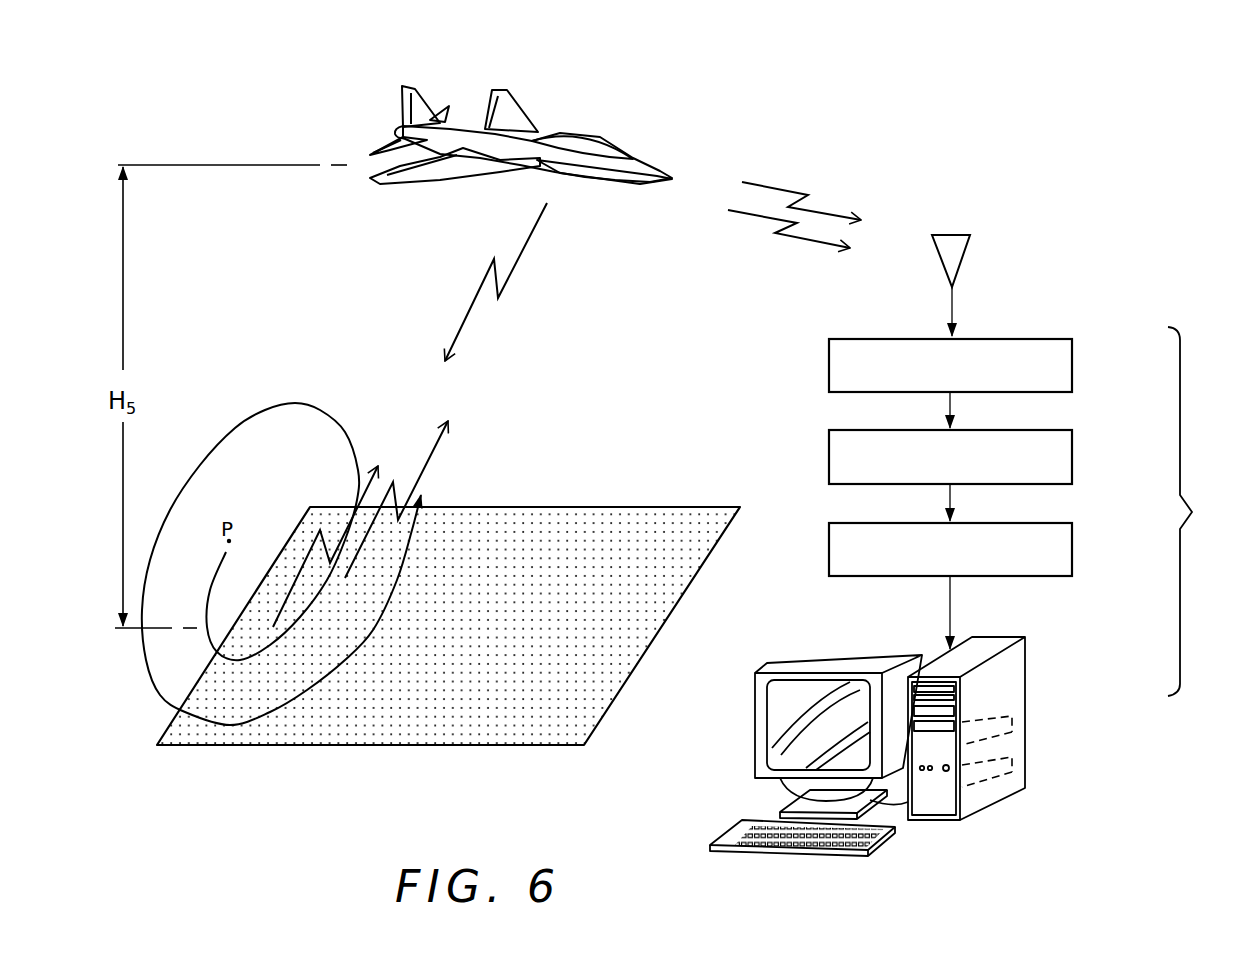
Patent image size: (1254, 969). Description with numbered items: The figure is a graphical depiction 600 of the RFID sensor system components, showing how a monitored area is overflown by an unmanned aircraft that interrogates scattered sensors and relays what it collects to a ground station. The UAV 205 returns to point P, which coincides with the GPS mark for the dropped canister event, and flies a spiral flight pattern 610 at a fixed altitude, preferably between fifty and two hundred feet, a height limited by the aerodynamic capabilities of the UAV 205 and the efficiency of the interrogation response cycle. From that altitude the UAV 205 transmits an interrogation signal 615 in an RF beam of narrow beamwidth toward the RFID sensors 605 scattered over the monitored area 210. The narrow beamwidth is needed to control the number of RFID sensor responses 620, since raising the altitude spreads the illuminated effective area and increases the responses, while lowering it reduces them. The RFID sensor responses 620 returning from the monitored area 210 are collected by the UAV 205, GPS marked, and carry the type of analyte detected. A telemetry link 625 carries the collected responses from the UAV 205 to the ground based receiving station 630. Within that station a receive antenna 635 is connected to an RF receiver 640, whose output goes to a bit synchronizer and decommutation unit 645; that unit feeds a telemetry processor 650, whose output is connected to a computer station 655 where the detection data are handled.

The UAV 205 is at (594, 148).
The monitored area 210 is at (549, 505).
The graphical depiction of the RFID system components 600 is at (915, 102).
The RFID sensors 605 is at (637, 540).
The spiral flight pattern 610 is at (268, 404).
The interrogation signal 615 is at (525, 253).
The RFID sensor responses 620 is at (427, 460).
The telemetry signal 625 is at (755, 213).
The ground based receiving station 630 is at (1203, 511).
The receive antenna 635 is at (960, 250).
The RF receiver 640 is at (1062, 355).
The bit synchronizer and decommutation unit 645 is at (1062, 446).
The telemetry processor 650 is at (1062, 538).
The computer station 655 is at (1016, 668).